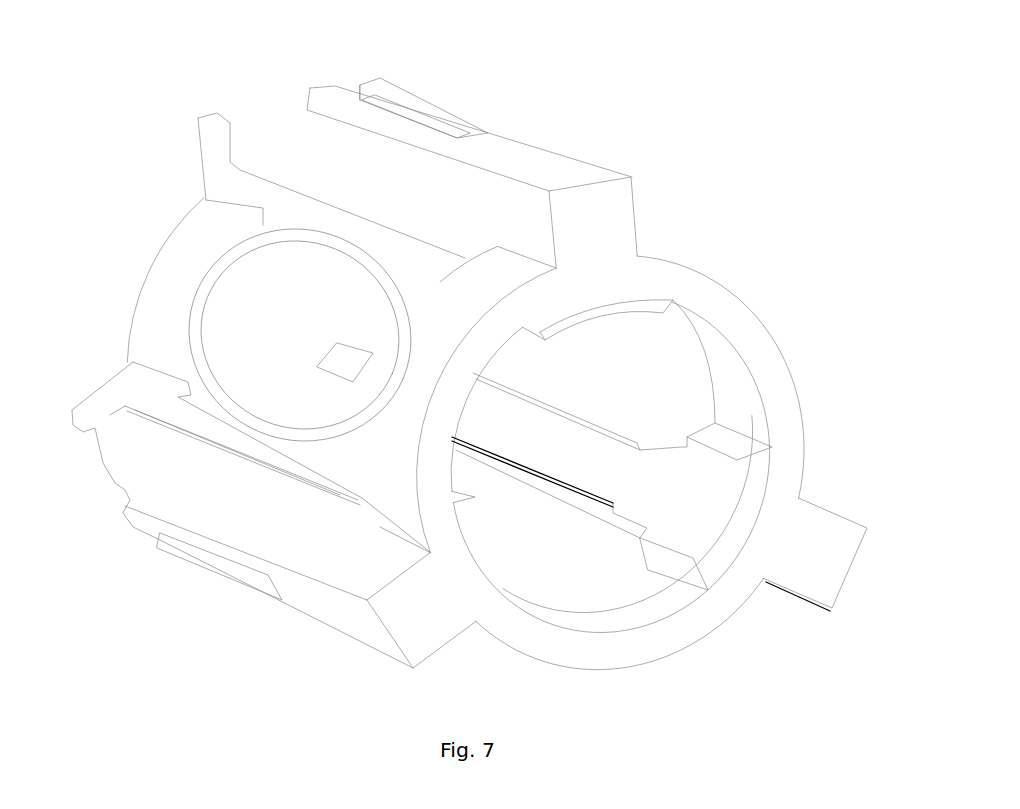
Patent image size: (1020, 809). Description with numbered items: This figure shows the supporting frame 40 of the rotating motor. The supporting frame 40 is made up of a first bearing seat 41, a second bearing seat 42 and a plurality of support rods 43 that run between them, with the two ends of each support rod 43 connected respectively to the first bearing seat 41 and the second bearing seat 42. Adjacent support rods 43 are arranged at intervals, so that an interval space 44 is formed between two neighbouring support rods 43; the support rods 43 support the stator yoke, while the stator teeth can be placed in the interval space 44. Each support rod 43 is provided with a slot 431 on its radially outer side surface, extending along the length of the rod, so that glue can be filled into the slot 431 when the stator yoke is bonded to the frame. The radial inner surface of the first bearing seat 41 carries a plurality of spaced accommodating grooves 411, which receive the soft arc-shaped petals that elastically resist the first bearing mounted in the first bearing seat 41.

The supporting frame 40 is at (606, 73).
The first bearing seat 41 is at (683, 277).
The accommodating groove 411 is at (739, 389).
The second bearing seat 42 is at (165, 258).
The support rod 43 is at (510, 148).
The slot 431 is at (437, 120).
The interval space 44 is at (327, 450).